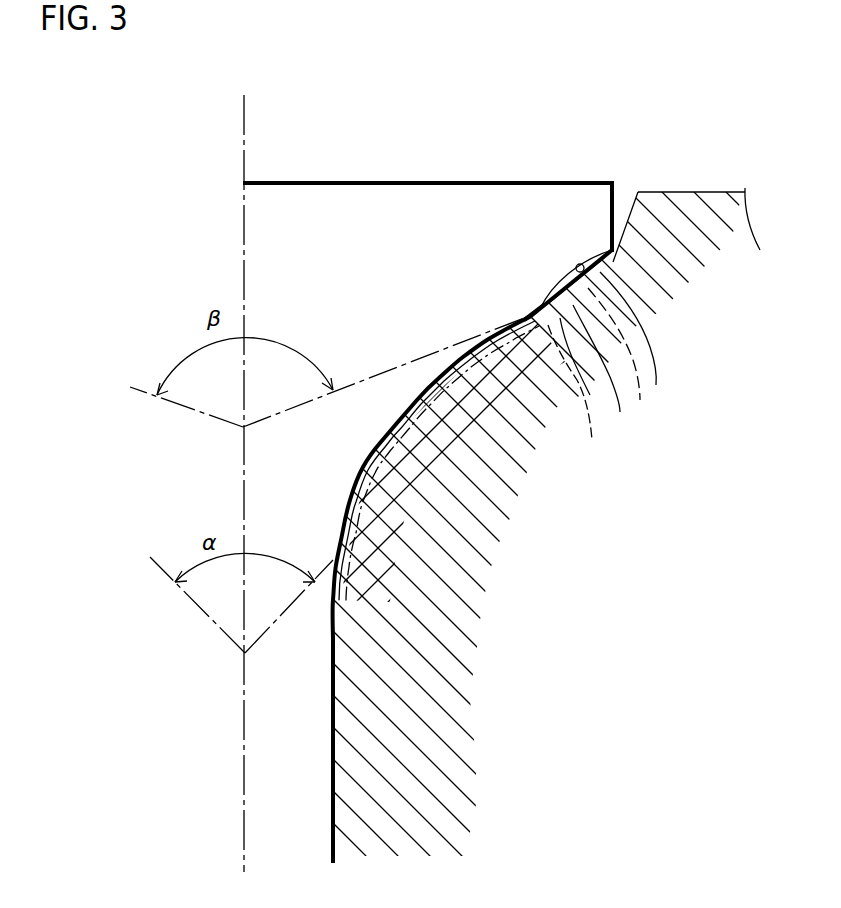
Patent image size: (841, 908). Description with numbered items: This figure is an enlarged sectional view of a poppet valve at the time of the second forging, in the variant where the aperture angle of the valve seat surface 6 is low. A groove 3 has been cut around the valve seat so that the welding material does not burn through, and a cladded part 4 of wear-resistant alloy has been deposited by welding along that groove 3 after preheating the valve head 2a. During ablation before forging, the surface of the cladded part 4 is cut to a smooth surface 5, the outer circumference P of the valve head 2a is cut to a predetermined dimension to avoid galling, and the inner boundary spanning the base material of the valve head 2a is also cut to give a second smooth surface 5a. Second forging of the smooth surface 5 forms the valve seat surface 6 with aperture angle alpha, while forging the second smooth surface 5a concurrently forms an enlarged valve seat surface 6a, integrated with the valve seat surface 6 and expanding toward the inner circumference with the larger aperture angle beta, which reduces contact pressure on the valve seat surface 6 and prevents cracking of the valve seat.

The valve head 2a is at (471, 160).
The outer circumference P is at (618, 207).
The groove 3 is at (573, 267).
The cladded part 4 is at (553, 280).
The smooth surface 5 is at (650, 347).
The valve seat surface 6 is at (633, 360).
The second smooth surface 5a is at (610, 377).
The enlarged valve seat surface 6a is at (577, 380).